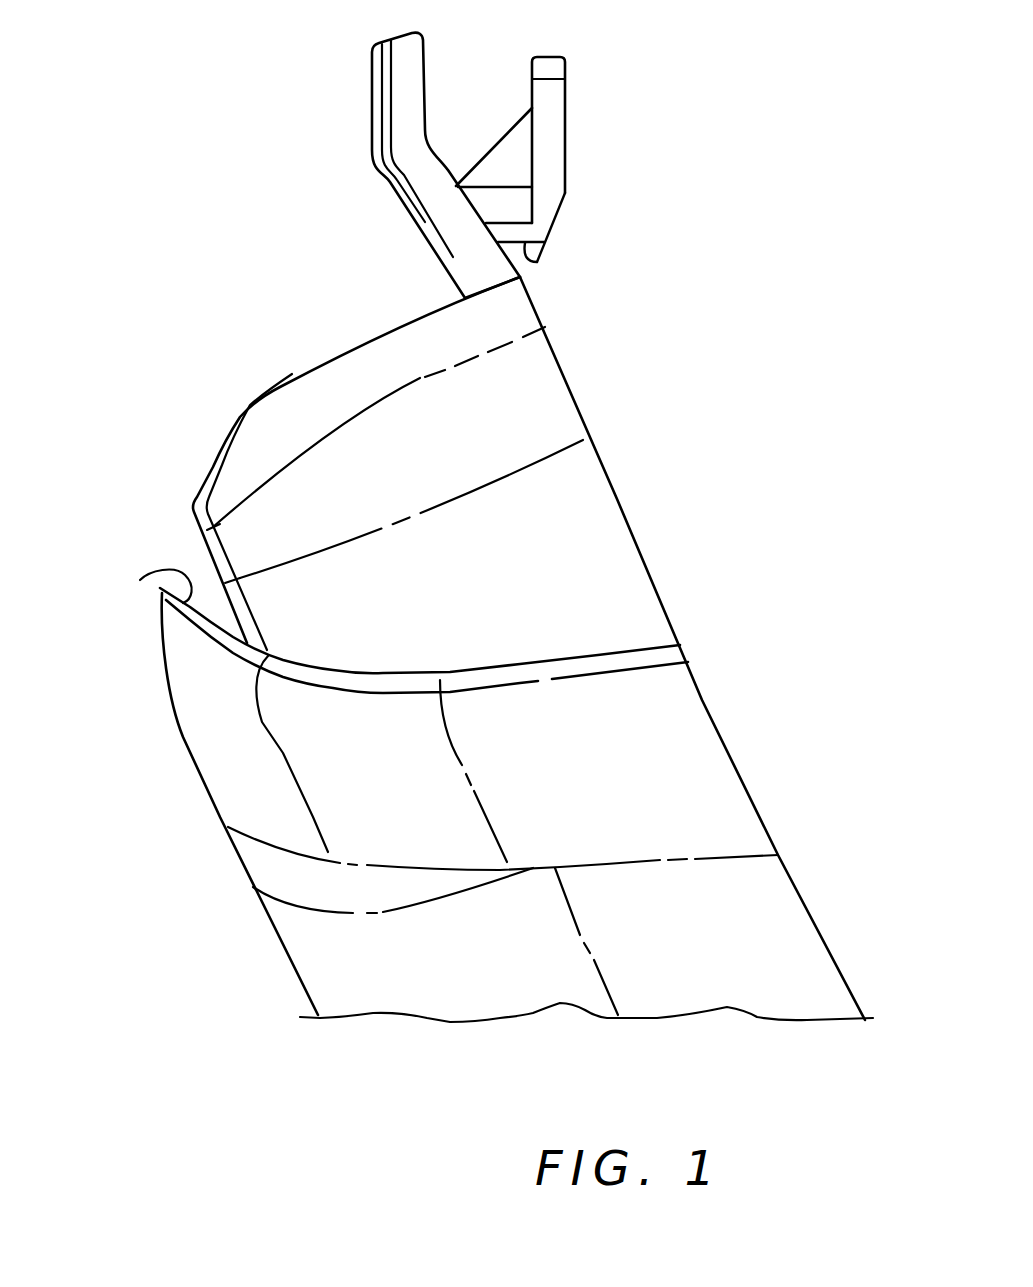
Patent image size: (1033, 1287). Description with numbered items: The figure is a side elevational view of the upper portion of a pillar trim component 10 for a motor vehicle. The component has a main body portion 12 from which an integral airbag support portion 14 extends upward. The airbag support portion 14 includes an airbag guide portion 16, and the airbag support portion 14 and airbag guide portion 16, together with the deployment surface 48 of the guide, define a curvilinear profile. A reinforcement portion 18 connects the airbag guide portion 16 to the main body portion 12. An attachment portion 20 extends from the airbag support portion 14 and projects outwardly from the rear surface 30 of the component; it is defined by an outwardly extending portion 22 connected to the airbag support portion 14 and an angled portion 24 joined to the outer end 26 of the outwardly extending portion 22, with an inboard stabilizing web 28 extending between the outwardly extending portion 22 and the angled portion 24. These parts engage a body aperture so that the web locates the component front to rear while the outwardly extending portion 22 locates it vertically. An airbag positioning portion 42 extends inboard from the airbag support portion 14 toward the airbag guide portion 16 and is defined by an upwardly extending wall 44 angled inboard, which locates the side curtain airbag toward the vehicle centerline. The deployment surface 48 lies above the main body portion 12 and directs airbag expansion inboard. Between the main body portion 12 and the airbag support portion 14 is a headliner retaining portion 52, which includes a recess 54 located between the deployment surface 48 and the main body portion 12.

The pillar trim component 10 is at (752, 672).
The main body portion 12 is at (158, 672).
The airbag support portion 14 is at (283, 330).
The airbag guide portion 16 is at (228, 416).
The reinforcement portion 18 is at (622, 495).
The attachment portion 20 is at (578, 112).
The outwardly extending portion 22 is at (538, 262).
The angled portion 24 is at (567, 160).
The outer end 26 is at (557, 214).
The inboard stabilizing web 28 is at (503, 133).
The rear surface 30 is at (558, 361).
The airbag positioning portion 42 is at (318, 132).
The upwardly extending wall 44 is at (441, 209).
The deployment surface 48 is at (211, 473).
The headliner retaining portion 52 is at (163, 545).
The recess 54 is at (140, 580).